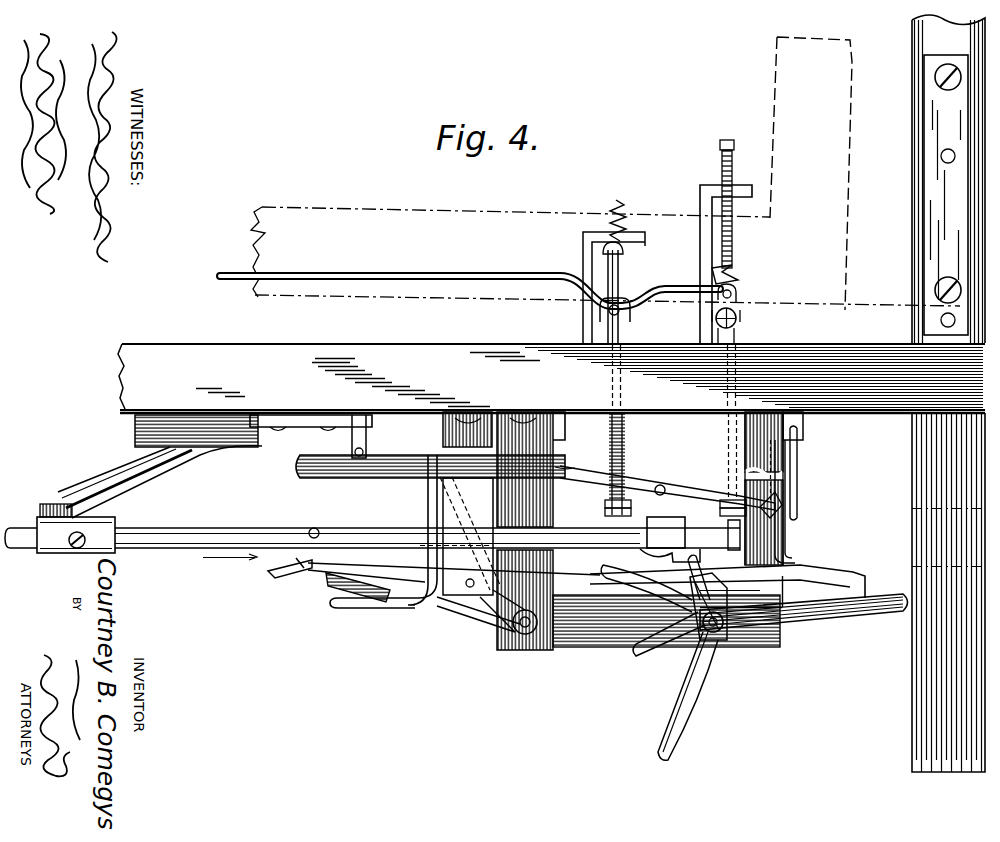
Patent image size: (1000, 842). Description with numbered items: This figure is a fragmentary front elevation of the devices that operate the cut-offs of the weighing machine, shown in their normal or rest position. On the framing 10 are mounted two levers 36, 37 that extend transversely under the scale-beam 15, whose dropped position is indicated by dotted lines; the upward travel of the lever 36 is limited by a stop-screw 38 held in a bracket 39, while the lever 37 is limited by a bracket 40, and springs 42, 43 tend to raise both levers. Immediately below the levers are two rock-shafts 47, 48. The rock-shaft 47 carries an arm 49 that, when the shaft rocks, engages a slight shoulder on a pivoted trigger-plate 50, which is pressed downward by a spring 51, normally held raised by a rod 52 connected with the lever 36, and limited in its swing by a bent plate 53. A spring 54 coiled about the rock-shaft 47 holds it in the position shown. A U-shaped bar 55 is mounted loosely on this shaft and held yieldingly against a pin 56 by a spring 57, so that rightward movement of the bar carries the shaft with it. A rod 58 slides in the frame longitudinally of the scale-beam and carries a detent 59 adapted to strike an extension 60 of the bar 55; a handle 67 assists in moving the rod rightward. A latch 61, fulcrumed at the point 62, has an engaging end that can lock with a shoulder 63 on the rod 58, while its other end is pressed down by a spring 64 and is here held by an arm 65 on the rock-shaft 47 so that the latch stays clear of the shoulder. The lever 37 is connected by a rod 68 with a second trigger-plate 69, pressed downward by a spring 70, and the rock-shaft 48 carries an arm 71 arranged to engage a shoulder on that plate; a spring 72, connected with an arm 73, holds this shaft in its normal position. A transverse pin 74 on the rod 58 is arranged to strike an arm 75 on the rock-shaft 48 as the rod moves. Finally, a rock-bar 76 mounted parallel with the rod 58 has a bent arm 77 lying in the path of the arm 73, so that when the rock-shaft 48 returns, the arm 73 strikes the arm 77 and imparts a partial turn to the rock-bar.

The framing 10 is at (916, 440).
The beam 15 is at (547, 228).
The lever 36 is at (737, 298).
The lever 37 is at (621, 294).
The stop-screw 38 is at (735, 241).
The bracket 39 is at (703, 251).
The bracket 40 is at (600, 286).
The spring 42 is at (735, 276).
The spring 43 is at (625, 208).
The rock-shaft 47 is at (560, 268).
The rock-shaft 48 is at (524, 636).
The arm 49 is at (640, 650).
The trigger-plate 50 is at (688, 494).
The spring 51 is at (652, 484).
The rod 52 is at (776, 490).
The bent plate 53 is at (776, 482).
The spring 54 is at (708, 706).
The U-shaped bar 55 is at (655, 647).
The pin 56 is at (794, 565).
The spring 57 is at (728, 598).
The rod 58 is at (229, 530).
The detent 59 is at (645, 556).
The extension 60 is at (762, 547).
The latch 61 is at (420, 590).
The fulcrum point 62 is at (470, 590).
The shoulder 63 is at (60, 542).
The spring 64 is at (800, 510).
The arm 65 is at (842, 614).
The handle 67 is at (156, 468).
The rod 68 is at (632, 322).
The trigger-plate 69 is at (650, 487).
The spring 70 is at (626, 447).
The arm 71 is at (440, 548).
The spring 72 is at (492, 622).
The arm 73 is at (335, 590).
The transverse pin 74 is at (318, 530).
The arm 75 is at (468, 536).
The rock-bar 76 is at (372, 478).
The bent arm 77 is at (374, 608).